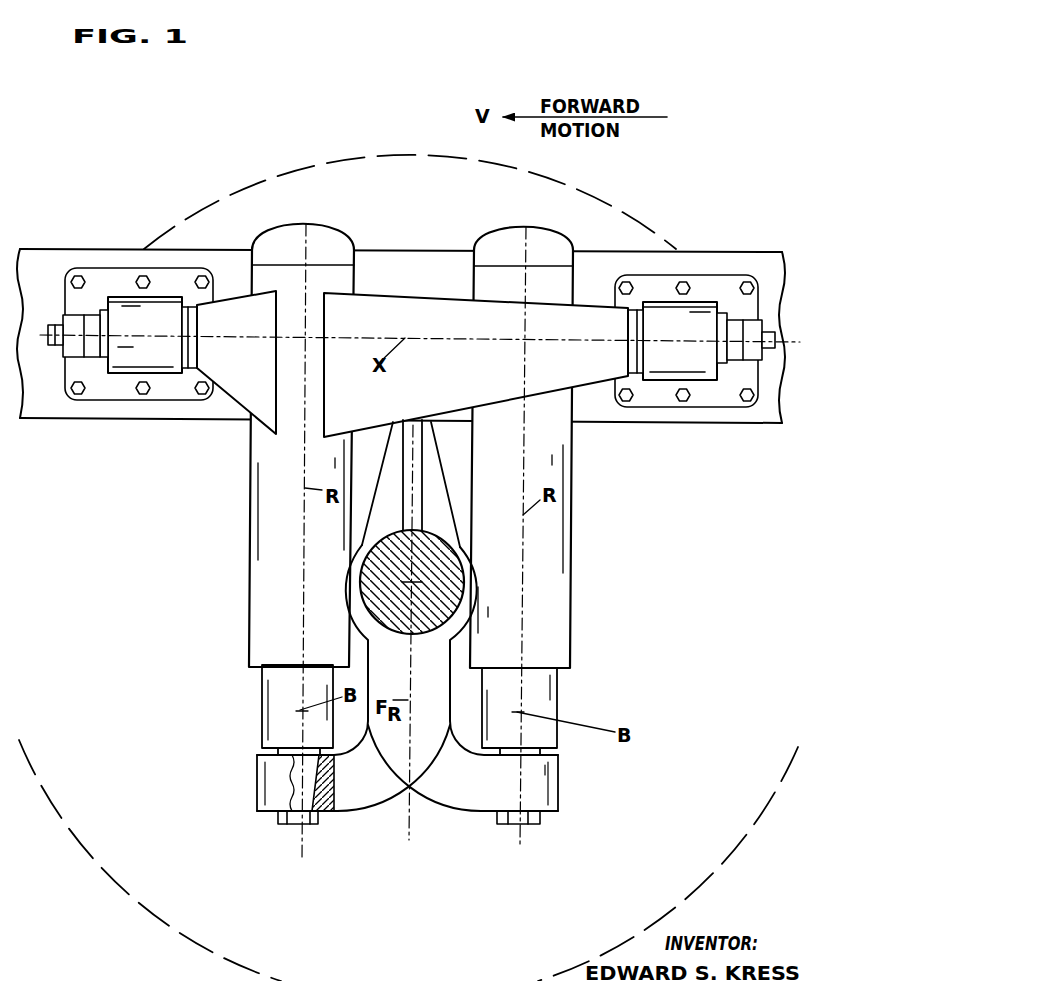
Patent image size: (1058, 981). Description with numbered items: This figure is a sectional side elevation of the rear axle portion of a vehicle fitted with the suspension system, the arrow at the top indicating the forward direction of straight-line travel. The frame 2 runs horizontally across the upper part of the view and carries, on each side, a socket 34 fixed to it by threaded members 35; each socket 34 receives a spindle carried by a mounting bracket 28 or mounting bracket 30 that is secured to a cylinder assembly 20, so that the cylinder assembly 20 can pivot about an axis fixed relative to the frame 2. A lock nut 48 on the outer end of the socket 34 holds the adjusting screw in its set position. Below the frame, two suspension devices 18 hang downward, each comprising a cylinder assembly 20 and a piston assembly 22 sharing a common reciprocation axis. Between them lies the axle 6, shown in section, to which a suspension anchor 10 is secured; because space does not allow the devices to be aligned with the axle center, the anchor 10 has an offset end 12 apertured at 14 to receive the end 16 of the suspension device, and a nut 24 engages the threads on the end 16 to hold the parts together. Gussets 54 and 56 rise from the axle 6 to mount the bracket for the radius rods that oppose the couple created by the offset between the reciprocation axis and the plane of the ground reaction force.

The frame 2 is at (50, 254).
The axle 6 is at (440, 563).
The suspension anchor 10 is at (358, 802).
The offset end 12 is at (265, 785).
The aperture 14 is at (318, 758).
The end of suspension device 16 is at (313, 782).
The suspension device 18 is at (249, 582).
The cylinder assembly 20 is at (273, 508).
The piston assembly 22 is at (278, 697).
The nut 24 is at (280, 815).
The mounting bracket 28 is at (250, 395).
The mounting bracket 30 is at (460, 317).
The socket 34 is at (130, 357).
The threaded members 35 is at (201, 280).
The lock nut 48 is at (78, 320).
The gusset 54 is at (410, 455).
The gusset 56 is at (397, 440).